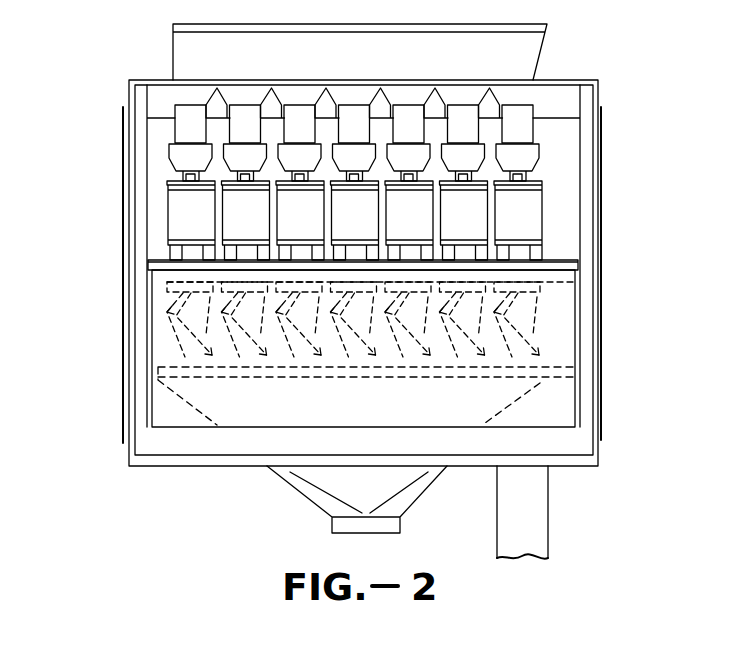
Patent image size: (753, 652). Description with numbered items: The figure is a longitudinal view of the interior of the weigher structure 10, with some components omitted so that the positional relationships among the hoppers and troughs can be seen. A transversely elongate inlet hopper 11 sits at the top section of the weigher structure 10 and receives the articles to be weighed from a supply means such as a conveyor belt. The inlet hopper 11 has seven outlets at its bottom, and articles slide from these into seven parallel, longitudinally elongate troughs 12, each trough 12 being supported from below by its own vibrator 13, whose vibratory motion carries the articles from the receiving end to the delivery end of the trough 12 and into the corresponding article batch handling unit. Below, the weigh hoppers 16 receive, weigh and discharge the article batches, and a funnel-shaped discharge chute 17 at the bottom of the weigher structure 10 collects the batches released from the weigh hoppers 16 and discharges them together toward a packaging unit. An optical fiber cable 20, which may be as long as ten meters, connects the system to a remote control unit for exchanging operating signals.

The weigher structure 10 is at (653, 87).
The inlet hopper 11 is at (530, 43).
The trough 12 is at (182, 155).
The vibrator 13 is at (178, 212).
The weigh hopper 16 is at (163, 313).
The funnel-shaped discharge chute 17 is at (513, 392).
The optical fiber cable 20 is at (535, 500).